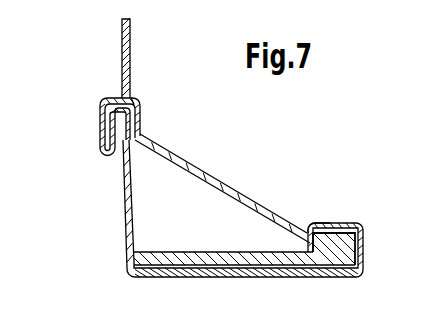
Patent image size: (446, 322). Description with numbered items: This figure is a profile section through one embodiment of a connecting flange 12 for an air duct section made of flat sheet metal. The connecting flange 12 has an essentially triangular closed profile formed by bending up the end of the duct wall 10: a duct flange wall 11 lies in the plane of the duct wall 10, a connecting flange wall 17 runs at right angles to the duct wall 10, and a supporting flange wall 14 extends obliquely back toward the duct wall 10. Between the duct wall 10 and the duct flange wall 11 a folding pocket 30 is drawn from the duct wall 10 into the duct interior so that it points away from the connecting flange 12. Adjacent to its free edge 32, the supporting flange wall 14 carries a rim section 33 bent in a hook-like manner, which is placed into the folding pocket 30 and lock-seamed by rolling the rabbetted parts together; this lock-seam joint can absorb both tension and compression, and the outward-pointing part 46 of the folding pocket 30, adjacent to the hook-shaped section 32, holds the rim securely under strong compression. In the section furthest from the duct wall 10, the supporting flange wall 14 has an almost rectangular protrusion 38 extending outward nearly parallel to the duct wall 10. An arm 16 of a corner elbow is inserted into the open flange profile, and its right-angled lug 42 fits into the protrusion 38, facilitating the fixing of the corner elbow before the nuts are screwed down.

The duct wall 10 is at (127, 46).
The part of the folding pocket 46 is at (130, 98).
The rim section 33 is at (109, 114).
The free edge 32 is at (114, 135).
The folding pocket 30 is at (109, 154).
The duct flange wall 11 is at (124, 207).
The connecting flange 12 is at (126, 263).
The supporting flange wall 14 is at (218, 184).
The protrusion 38 is at (320, 223).
The lug 42 is at (337, 236).
The arm 16 is at (242, 258).
The connecting flange wall 17 is at (290, 274).